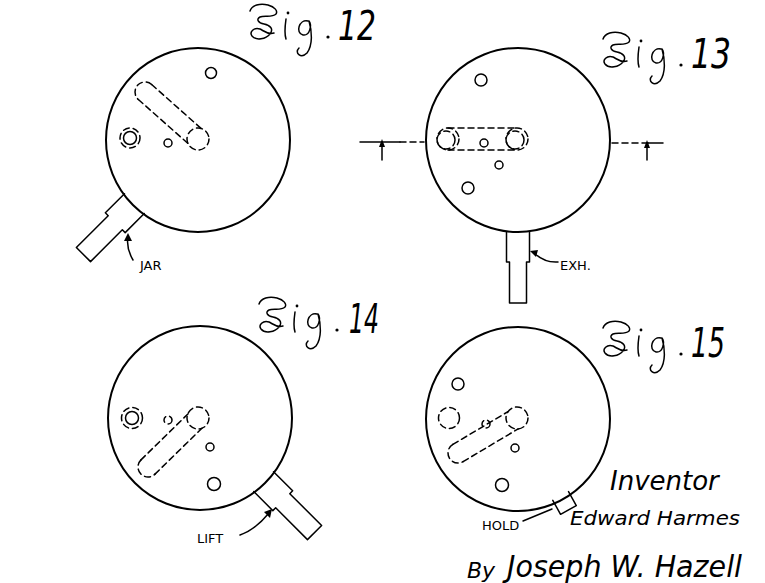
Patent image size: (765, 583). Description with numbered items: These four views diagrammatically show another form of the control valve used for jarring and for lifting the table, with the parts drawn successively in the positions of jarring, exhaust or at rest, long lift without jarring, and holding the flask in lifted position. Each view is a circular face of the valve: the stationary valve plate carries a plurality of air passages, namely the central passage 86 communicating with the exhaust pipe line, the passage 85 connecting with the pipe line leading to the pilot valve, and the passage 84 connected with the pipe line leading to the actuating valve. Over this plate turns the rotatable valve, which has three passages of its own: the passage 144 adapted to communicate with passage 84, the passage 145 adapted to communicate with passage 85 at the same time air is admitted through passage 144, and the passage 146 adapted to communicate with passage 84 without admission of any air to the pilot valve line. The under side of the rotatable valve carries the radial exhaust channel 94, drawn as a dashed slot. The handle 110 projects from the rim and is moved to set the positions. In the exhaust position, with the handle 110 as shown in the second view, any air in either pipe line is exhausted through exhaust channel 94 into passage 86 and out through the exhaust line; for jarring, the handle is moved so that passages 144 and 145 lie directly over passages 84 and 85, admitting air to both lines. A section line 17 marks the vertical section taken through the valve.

In FIG. 12, the passage 84 is at (120, 129).
In FIG. 13, the passage 84 is at (442, 128).
In FIG. 14, the passage 84 is at (121, 408).
In FIG. 15, the passage 84 is at (438, 417).
In FIG. 13, the passage 85 is at (482, 146).
In FIG. 14, the passage 85 is at (169, 415).
In FIG. 15, the passage 85 is at (491, 420).
In FIG. 12, the central passage 86 is at (210, 140).
In FIG. 13, the central passage 86 is at (526, 143).
In FIG. 14, the central passage 86 is at (210, 418).
In FIG. 15, the central passage 86 is at (528, 418).
In FIG. 12, the radial exhaust channel 94 is at (140, 84).
In FIG. 13, the radial exhaust channel 94 is at (478, 128).
In FIG. 14, the radial exhaust channel 94 is at (145, 455).
In FIG. 15, the radial exhaust channel 94 is at (463, 462).
In FIG. 12, the handle 110 is at (90, 237).
In FIG. 13, the handle 110 is at (512, 282).
In FIG. 14, the handle 110 is at (303, 520).
In FIG. 15, the handle 110 is at (580, 498).
In FIG. 12, the passage 144 is at (124, 144).
In FIG. 13, the passage 144 is at (466, 195).
In FIG. 14, the passage 144 is at (207, 483).
In FIG. 15, the passage 144 is at (509, 485).
In FIG. 12, the passage 145 is at (168, 147).
In FIG. 13, the passage 145 is at (503, 169).
In FIG. 14, the passage 145 is at (214, 447).
In FIG. 15, the passage 145 is at (519, 448).
In FIG. 12, the passage 146 is at (216, 78).
In FIG. 13, the passage 146 is at (484, 74).
In FIG. 14, the passage 146 is at (124, 422).
In FIG. 15, the passage 146 is at (462, 379).
In FIG. 13, the section line 17 is at (512, 147).